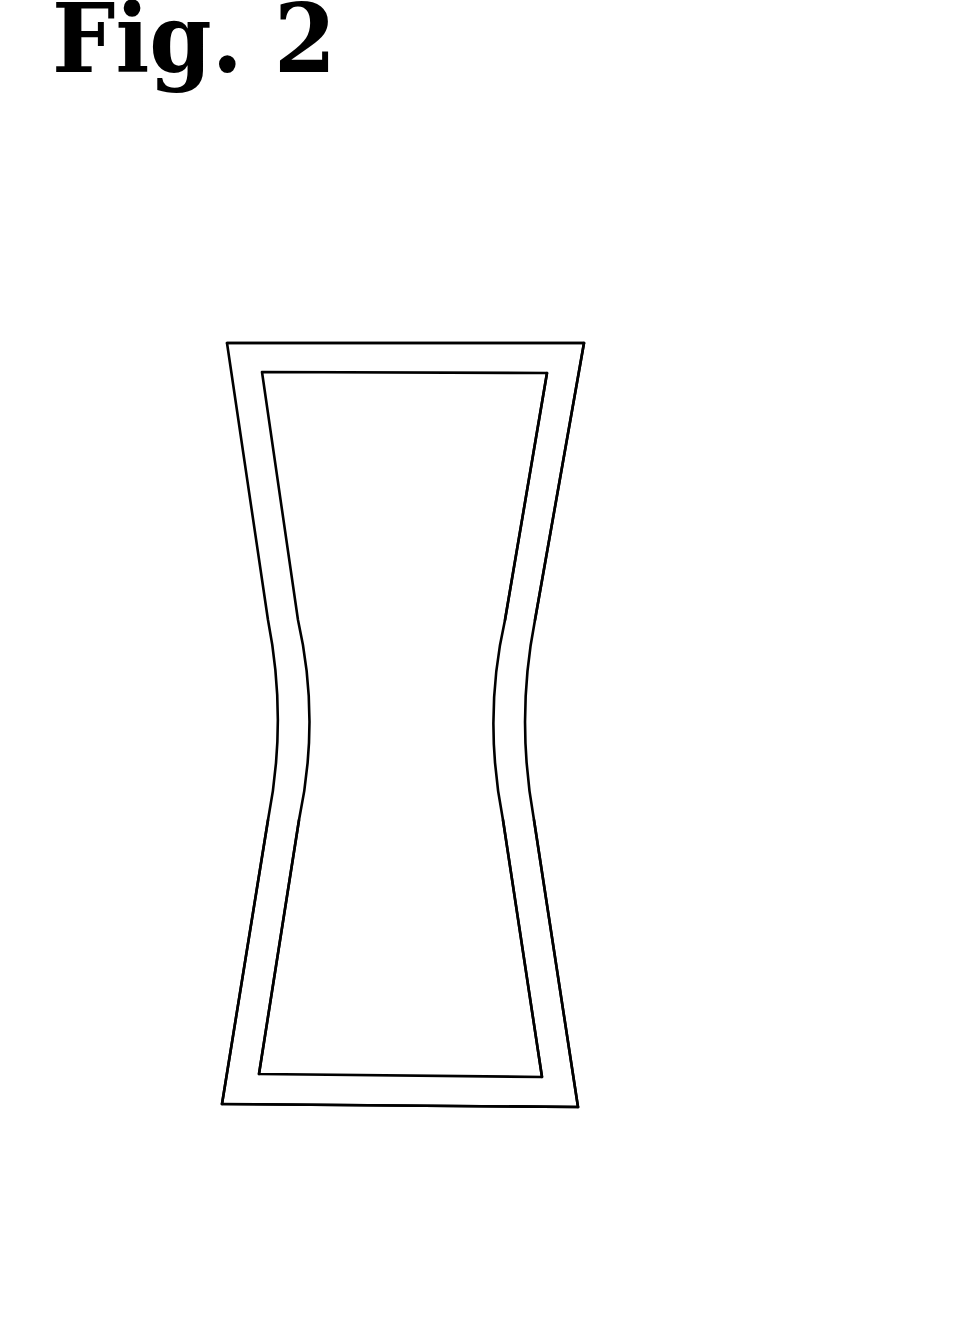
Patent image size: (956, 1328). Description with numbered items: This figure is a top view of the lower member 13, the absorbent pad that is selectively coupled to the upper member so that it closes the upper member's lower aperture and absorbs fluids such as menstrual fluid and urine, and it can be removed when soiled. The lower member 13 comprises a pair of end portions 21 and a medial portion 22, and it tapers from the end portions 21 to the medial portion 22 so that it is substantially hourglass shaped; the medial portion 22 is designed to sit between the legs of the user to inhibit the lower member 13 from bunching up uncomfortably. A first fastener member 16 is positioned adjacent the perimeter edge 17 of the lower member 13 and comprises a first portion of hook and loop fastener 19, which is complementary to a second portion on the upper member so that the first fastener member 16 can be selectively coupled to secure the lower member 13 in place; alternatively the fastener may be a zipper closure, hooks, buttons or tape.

The lower member 13 is at (584, 343).
The first fastener member 16 is at (527, 564).
The perimeter edge 17 is at (557, 963).
The first portion of hook and loop fastener 19 is at (270, 865).
The end portions 21 is at (403, 343).
The medial portion 22 is at (408, 719).